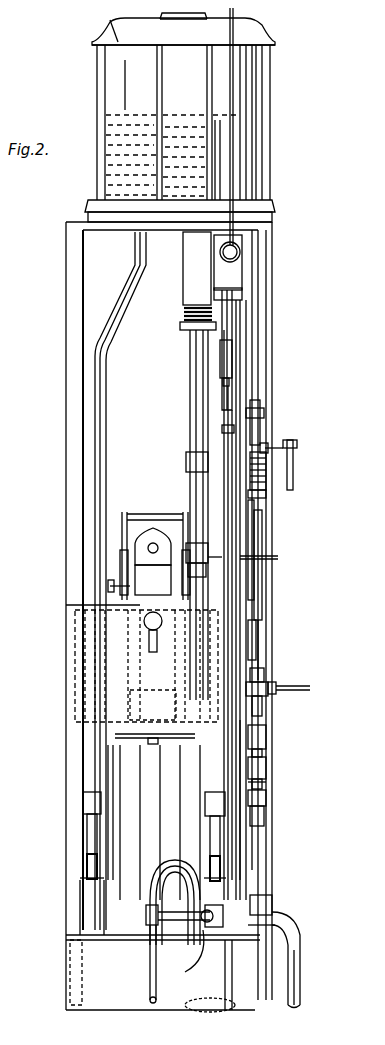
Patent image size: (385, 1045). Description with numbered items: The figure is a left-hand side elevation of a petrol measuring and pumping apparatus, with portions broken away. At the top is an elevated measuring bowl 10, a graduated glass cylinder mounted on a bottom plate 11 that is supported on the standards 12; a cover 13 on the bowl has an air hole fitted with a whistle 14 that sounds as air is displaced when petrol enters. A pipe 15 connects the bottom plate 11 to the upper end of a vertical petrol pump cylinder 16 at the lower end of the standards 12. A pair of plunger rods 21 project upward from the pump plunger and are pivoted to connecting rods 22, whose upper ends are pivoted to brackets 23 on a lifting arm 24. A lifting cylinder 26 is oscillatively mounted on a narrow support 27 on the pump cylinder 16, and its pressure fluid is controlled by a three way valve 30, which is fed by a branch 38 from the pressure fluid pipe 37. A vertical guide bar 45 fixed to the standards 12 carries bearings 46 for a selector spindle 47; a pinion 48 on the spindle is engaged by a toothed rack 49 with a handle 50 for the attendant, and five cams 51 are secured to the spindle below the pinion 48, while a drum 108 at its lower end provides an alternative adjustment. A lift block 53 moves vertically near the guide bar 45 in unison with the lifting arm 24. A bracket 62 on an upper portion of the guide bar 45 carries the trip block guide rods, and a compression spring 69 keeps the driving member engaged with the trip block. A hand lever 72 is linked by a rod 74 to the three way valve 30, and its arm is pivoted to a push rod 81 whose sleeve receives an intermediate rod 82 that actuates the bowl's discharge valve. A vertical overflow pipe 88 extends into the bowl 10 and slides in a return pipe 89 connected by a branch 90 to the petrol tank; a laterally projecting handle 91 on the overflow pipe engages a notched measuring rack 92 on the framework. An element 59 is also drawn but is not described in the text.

The measuring bowl 10 is at (118, 75).
The bottom plate 11 is at (272, 212).
The standards 12 is at (265, 306).
The cover 13 is at (117, 31).
The whistle 14 is at (180, 22).
The pipe 15 is at (112, 420).
The petrol pump cylinder 16 is at (163, 946).
The plunger rods 21 is at (92, 836).
The connecting rods 22 is at (110, 604).
The brackets 23 is at (112, 586).
The lifting arm 24 is at (153, 580).
The lifting cylinder 26 is at (136, 752).
The narrow support 27 is at (153, 651).
The three way valve 30 is at (187, 959).
The pipe 37 is at (150, 992).
The branch 38 is at (175, 922).
The vertical guide bar 45 is at (240, 608).
The bearings 46 is at (236, 858).
The selector spindle 47 is at (262, 780).
The pinion 48 is at (252, 694).
The toothed rack 49 is at (272, 683).
The handle 50 is at (310, 690).
The cams 51 is at (262, 745).
The lift block 53 is at (262, 790).
The guide bar 59 is at (262, 640).
The bracket 62 is at (266, 424).
The compression spring 69 is at (262, 478).
The hand lever 72 is at (293, 472).
The rod 74 is at (232, 540).
The push rod 81 is at (222, 392).
The intermediate rod 82 is at (228, 342).
The overflow pipe 88 is at (200, 355).
The return pipe 89 is at (195, 870).
The branch 90 is at (300, 960).
The handle 91 is at (278, 557).
The measuring rack 92 is at (262, 588).
The drum 108 is at (272, 905).